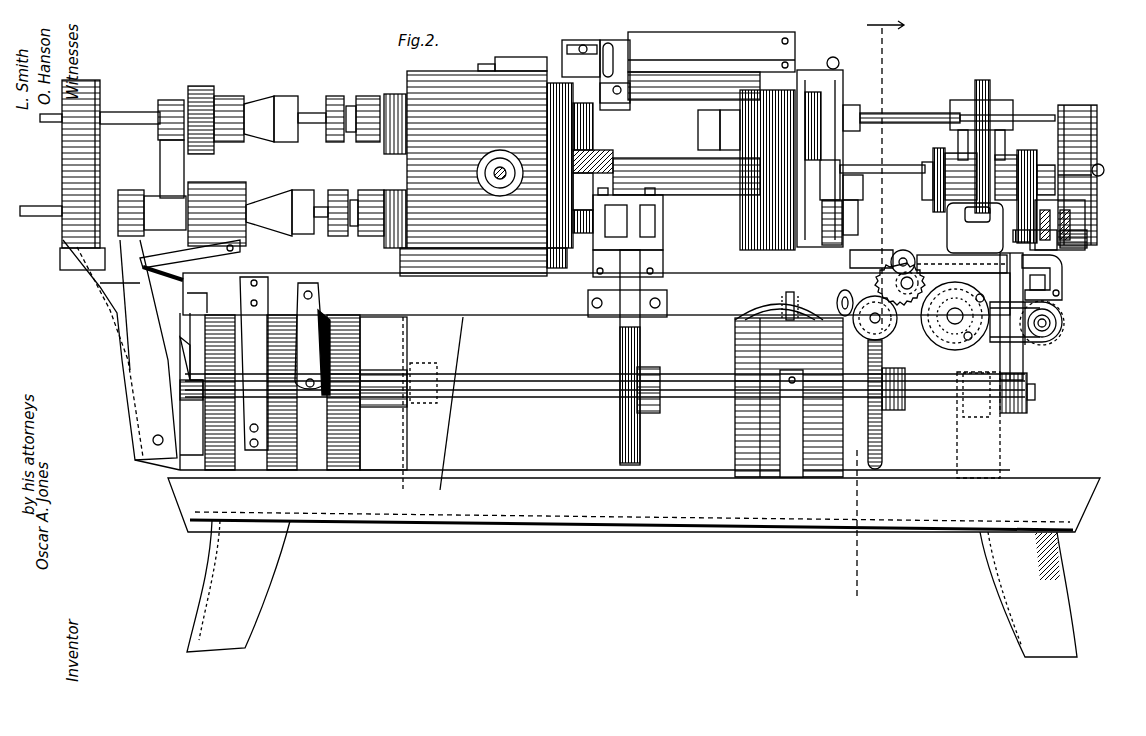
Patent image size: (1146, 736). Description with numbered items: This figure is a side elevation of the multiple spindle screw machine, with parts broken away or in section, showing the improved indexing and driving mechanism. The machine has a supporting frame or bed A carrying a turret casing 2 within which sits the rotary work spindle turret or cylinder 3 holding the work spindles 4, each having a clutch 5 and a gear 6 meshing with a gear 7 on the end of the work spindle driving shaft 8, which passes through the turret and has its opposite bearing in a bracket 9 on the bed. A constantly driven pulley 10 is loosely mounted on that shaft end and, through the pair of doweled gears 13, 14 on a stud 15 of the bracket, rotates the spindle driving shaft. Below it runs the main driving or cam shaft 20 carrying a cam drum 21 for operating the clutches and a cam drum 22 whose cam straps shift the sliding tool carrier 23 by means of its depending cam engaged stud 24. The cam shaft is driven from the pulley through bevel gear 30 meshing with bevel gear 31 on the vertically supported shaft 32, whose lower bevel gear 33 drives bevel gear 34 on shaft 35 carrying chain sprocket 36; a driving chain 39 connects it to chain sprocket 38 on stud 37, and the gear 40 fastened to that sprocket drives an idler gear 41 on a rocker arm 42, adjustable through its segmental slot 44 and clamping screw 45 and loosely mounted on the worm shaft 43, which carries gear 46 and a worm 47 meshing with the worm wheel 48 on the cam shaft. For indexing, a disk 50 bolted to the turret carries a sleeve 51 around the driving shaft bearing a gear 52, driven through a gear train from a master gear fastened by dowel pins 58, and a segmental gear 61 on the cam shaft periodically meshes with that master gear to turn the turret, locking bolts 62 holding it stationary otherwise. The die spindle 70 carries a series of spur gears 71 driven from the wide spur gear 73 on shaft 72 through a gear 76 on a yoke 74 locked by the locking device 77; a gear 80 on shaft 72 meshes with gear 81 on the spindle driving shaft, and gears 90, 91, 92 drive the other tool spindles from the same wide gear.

The supporting frame or bed A is at (596, 294).
The turret casing 2 is at (473, 166).
The rotary work spindle turret or cylinder 3 is at (577, 60).
The work spindles 4 is at (595, 130).
The clutch 5 is at (312, 112).
The gear 6 is at (395, 94).
The gear 7 is at (362, 196).
The work spindle driving shaft 8 is at (605, 162).
The bracket 9 is at (1027, 150).
The driving pulley 10 is at (1090, 120).
The gear 13 is at (1008, 156).
The gear 14 is at (1046, 165).
The stud 15 is at (1070, 180).
The main driving or cam shaft 20 is at (545, 378).
The cam drum 21 is at (355, 366).
The cam drum 22 is at (736, 424).
The sliding tool carrier 23 is at (711, 66).
The cam engaged stud 24 is at (779, 295).
The bevel gear 30 is at (1085, 222).
The bevel gear 31 is at (1087, 240).
The vertically supported shaft 32 is at (1062, 278).
The bevel gear 33 is at (1058, 312).
The bevel gear 34 is at (1058, 340).
The shaft 35 is at (1060, 322).
The chain sprocket 36 is at (1056, 330).
The stud 37 is at (950, 322).
The chain sprocket 38 is at (965, 318).
The driving chain 39 is at (1030, 340).
The gear 40 is at (968, 340).
The idler gear 41 is at (962, 254).
The rocker arm 42 is at (903, 251).
The worm shaft 43 is at (845, 318).
The segmental slot 44 is at (858, 262).
The clamping screw 45 is at (835, 300).
The gear 46 is at (890, 330).
The worm 47 is at (887, 285).
The worm wheel 48 is at (883, 425).
The disk 50 is at (605, 75).
The sleeve 51 is at (645, 160).
The gear 52 is at (932, 200).
The dowel pins 58 is at (1015, 243).
The segmental gear 61 is at (1062, 296).
The locking bolts 62 is at (498, 175).
The die spindle 70 is at (718, 106).
The spur gears 71 is at (742, 148).
The shaft 72 is at (908, 114).
The spur gear 73 is at (830, 92).
The yoke 74 is at (840, 110).
The gear 76 is at (806, 80).
The locking device 77 is at (835, 52).
The gear 80 is at (984, 80).
The gear 81 is at (975, 228).
The gear 90 is at (845, 168).
The gear 91 is at (840, 210).
The gear 92 is at (848, 238).